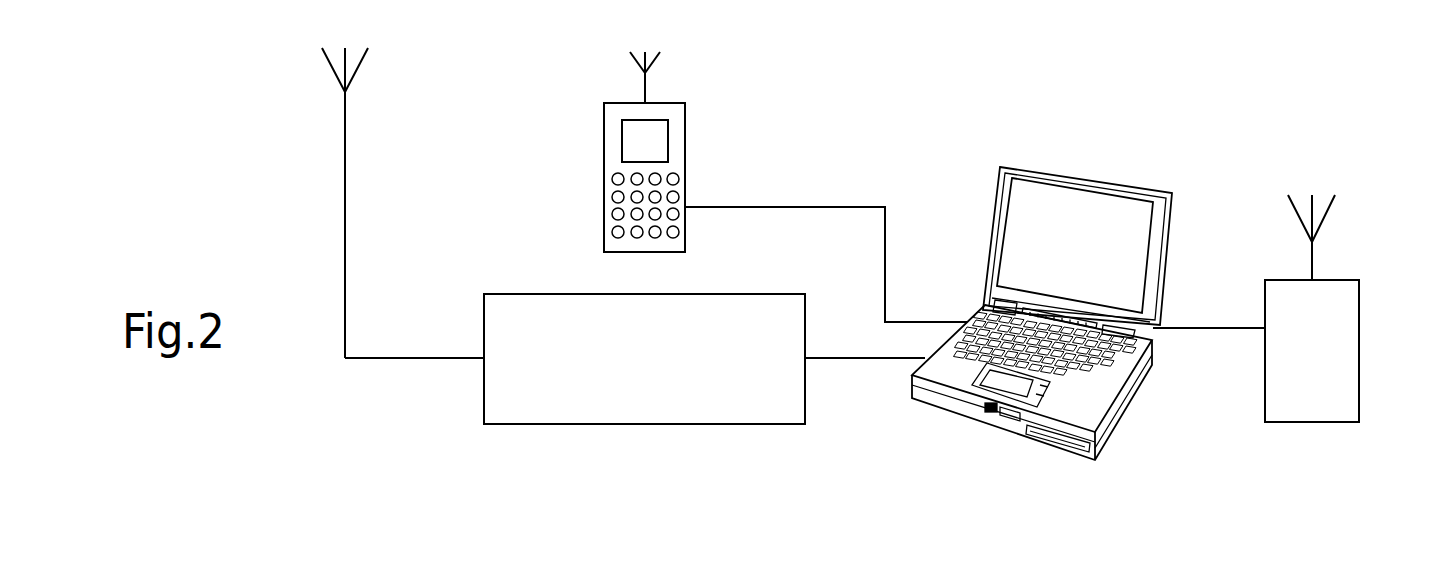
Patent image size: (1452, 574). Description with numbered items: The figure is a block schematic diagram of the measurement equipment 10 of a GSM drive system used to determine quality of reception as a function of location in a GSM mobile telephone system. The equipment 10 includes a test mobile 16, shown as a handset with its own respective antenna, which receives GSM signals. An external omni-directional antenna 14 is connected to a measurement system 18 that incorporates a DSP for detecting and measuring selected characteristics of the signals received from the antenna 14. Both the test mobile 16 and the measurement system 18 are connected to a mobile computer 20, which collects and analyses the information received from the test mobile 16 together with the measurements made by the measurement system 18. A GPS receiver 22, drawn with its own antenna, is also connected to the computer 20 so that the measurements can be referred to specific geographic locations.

The measurement equipment 10 is at (936, 116).
The external omni-directional antenna 14 is at (347, 133).
The test mobile 16 is at (687, 122).
The measurement system 18 is at (483, 388).
The mobile computer 20 is at (1085, 177).
The GPS receiver 22 is at (1361, 322).